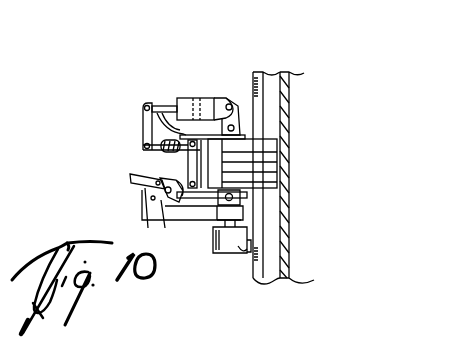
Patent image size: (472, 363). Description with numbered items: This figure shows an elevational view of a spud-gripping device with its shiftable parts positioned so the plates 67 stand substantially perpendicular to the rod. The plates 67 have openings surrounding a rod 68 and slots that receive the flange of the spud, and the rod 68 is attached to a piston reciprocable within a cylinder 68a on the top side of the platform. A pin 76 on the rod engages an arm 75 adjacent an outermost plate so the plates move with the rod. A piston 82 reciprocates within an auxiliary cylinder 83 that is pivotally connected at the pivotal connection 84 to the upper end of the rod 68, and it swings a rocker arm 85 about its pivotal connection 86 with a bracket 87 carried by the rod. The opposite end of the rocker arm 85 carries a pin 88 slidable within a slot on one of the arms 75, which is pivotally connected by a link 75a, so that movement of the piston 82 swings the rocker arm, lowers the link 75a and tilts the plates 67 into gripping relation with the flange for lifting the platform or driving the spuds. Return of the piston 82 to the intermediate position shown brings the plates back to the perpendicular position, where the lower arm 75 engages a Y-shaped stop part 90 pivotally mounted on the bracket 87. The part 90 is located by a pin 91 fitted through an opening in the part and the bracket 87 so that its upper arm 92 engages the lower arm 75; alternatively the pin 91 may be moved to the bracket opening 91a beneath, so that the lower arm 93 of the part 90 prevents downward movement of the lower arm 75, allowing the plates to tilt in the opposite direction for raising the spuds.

The plates 67 is at (276, 157).
The rod 68 is at (243, 199).
The cylinder 68a is at (246, 241).
The arms 75 is at (151, 101).
The link 75a is at (137, 181).
The pin 76 is at (249, 120).
The piston 82 is at (202, 96).
The auxiliary cylinder 83 is at (191, 97).
The pivotal connection 84 is at (231, 103).
The rocker arm 85 is at (143, 121).
The pivotal connection 86 is at (170, 142).
The bracket 87 is at (152, 189).
The pin 88 is at (176, 154).
The Y-shaped stop part 90 is at (177, 203).
The pin 91 is at (146, 212).
The bracket opening 91a is at (163, 207).
The upper arm 92 is at (160, 196).
The lower arm 93 is at (179, 216).